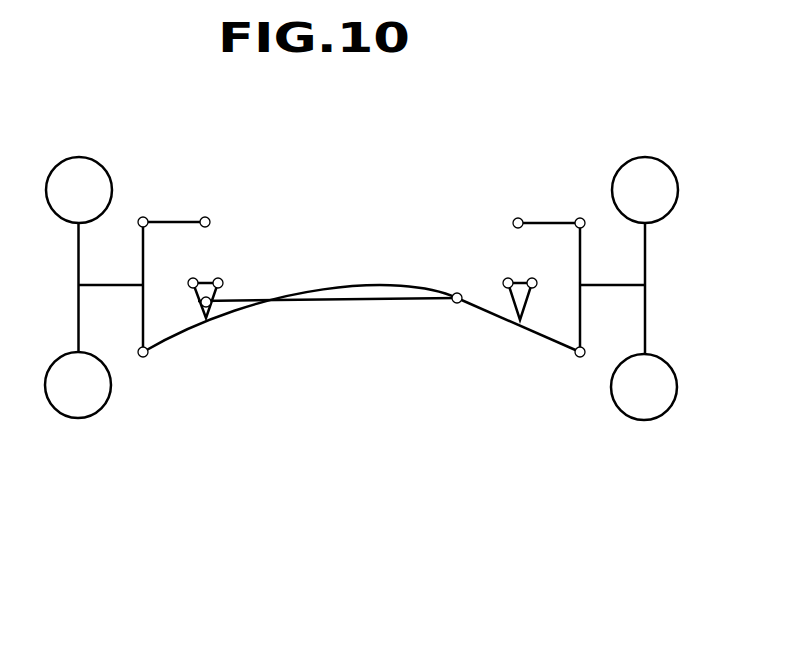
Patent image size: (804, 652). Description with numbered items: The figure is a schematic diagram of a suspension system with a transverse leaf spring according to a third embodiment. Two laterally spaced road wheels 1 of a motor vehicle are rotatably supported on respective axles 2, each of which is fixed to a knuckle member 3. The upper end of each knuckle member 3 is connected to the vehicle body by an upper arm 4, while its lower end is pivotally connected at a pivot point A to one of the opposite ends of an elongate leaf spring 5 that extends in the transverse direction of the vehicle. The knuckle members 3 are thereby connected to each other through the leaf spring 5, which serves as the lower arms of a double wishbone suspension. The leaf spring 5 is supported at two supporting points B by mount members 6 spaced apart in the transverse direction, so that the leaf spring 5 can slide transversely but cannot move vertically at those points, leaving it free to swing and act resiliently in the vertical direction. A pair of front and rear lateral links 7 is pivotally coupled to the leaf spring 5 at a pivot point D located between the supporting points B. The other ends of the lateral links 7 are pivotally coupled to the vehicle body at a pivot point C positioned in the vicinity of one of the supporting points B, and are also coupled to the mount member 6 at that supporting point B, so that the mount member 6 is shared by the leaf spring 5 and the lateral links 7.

The road wheel 1 is at (78, 323).
The axle 2 is at (110, 285).
The knuckle member 3 is at (143, 250).
The upper arm 4 is at (178, 222).
The leaf spring 5 is at (372, 284).
The mount member 6 is at (200, 301).
The lateral link 7 is at (350, 300).
The pivot point A is at (143, 358).
The supporting point B is at (207, 320).
The pivot point C is at (217, 297).
The pivot point D is at (458, 293).